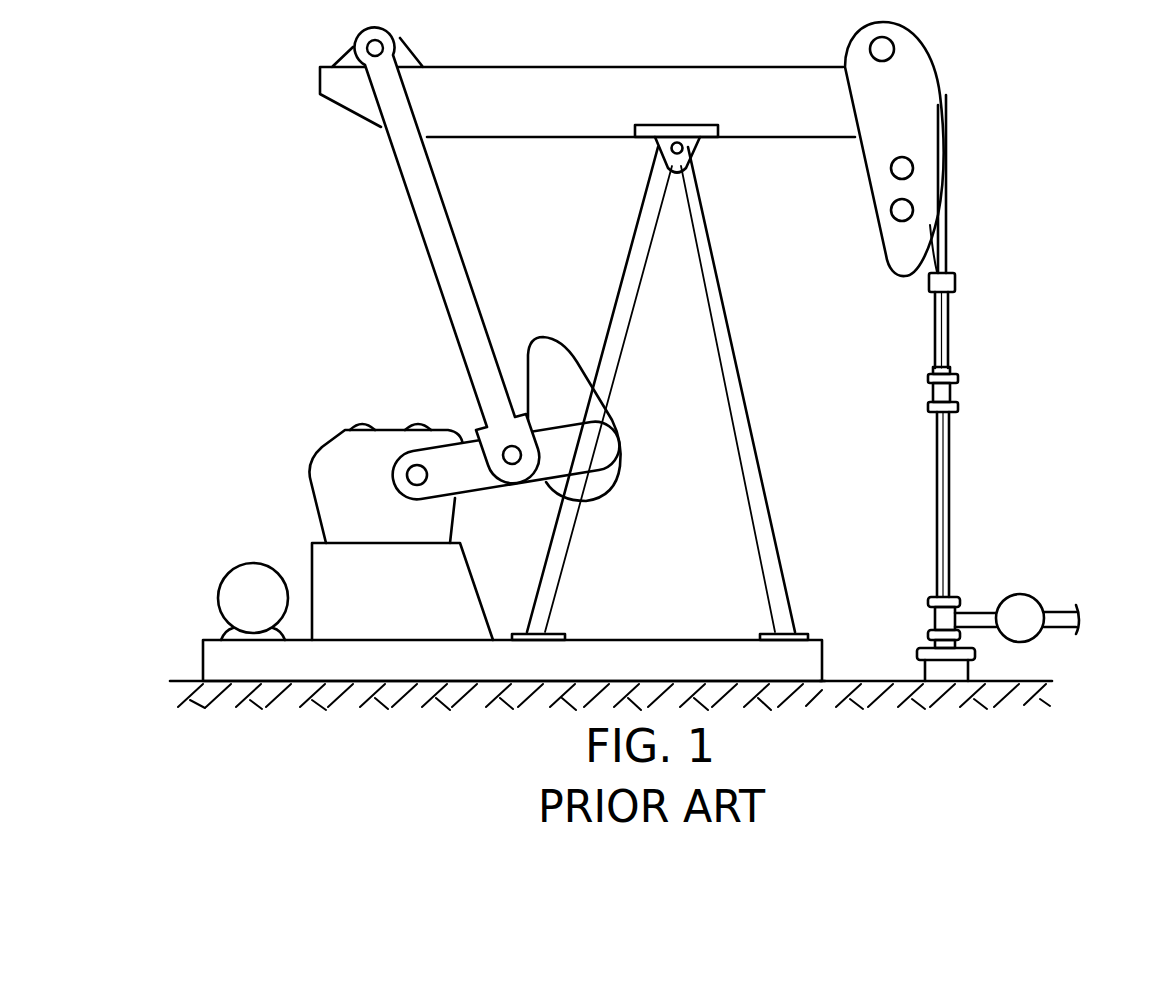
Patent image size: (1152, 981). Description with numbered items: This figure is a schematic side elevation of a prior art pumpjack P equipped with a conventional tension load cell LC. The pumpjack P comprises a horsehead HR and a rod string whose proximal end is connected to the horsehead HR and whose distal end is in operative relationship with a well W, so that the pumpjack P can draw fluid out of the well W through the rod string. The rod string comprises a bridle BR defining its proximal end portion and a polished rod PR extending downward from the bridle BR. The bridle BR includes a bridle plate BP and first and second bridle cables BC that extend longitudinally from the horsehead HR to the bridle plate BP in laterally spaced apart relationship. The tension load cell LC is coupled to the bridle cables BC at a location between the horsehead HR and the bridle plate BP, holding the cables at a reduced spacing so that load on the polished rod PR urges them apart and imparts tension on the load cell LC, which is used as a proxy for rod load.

The horsehead HR is at (926, 105).
The bridle BR is at (1032, 107).
The tension load cell LC is at (973, 244).
The bridle cables BC is at (947, 345).
The bridle plate BP is at (930, 394).
The polished rod PR is at (936, 474).
The well W is at (916, 651).
The pumpjack P is at (250, 211).